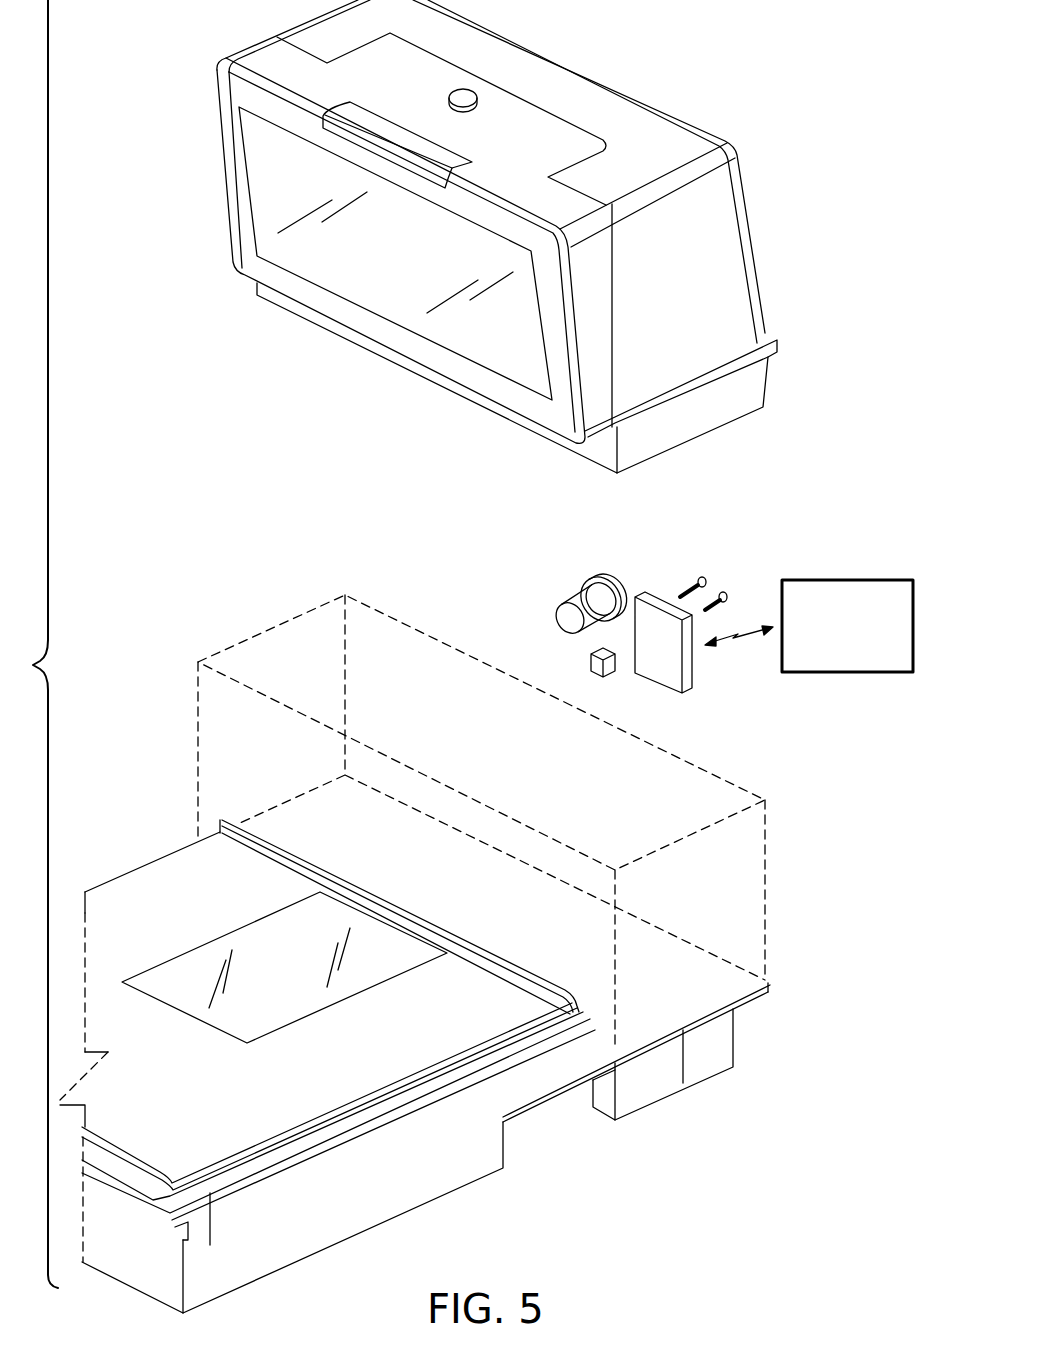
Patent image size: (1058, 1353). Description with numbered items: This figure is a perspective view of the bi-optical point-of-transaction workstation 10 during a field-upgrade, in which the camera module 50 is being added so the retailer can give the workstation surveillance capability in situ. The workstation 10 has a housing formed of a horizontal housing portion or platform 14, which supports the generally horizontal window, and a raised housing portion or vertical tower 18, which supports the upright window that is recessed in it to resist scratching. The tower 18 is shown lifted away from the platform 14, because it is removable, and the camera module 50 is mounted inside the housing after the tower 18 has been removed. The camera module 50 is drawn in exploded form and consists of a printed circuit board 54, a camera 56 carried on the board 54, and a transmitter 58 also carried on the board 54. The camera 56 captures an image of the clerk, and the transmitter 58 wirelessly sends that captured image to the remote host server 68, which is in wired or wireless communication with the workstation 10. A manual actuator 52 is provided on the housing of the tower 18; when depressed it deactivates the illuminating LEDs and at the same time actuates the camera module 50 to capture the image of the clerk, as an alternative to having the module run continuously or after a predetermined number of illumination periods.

The point-of-transaction workstation 10 is at (150, 247).
The horizontal housing portion or platform 14 is at (150, 871).
The raised housing portion or vertical tower 18 is at (222, 166).
The camera module 50 is at (692, 572).
The manual actuator 52 is at (478, 97).
The printed circuit board 54 is at (658, 682).
The camera 56 is at (572, 595).
The transmitter 58 is at (590, 660).
The remote host server 68 is at (845, 580).